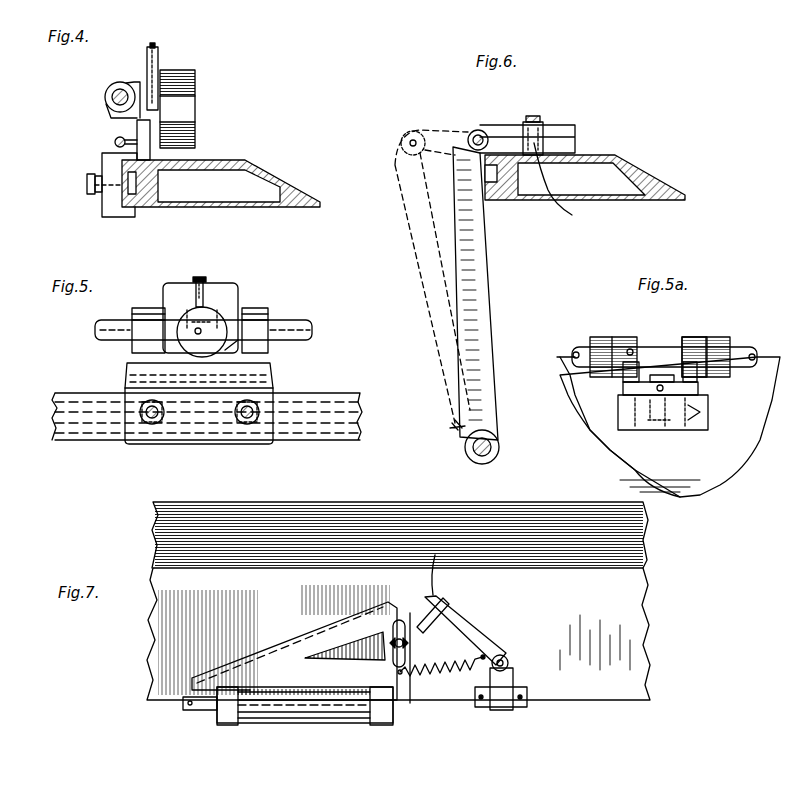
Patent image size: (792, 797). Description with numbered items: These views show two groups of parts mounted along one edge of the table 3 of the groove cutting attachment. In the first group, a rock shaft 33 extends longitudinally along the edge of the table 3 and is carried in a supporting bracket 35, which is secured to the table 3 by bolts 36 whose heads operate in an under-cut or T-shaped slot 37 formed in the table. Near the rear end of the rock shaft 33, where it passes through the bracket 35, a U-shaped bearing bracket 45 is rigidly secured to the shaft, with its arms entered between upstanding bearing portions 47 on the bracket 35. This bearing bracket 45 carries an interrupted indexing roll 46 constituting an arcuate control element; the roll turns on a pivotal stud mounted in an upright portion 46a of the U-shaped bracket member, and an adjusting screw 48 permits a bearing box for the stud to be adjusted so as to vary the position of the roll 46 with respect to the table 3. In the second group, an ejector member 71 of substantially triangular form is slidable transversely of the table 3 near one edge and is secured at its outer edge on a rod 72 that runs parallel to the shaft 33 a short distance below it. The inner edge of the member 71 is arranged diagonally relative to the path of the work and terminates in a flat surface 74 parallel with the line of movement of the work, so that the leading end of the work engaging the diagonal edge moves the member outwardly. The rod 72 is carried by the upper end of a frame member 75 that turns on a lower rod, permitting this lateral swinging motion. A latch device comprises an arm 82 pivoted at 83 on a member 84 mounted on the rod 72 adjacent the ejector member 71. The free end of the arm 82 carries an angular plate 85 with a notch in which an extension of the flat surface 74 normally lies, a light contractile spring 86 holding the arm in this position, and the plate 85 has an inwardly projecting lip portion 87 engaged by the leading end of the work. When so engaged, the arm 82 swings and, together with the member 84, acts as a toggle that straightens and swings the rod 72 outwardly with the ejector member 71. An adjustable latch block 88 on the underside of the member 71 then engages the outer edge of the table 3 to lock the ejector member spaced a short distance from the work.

In FIG. 4, the table 3 is at (232, 160).
In FIG. 5, the table 3 is at (325, 393).
In FIG. 6, the table 3 is at (612, 157).
In FIG. 5A, the table 3 is at (690, 470).
In FIG. 7, the table 3 is at (210, 640).
In FIG. 4, the rock shaft 33 is at (112, 92).
In FIG. 5, the rock shaft 33 is at (290, 320).
In FIG. 5A, the rock shaft 33 is at (580, 350).
In FIG. 4, the bracket 35 is at (118, 210).
In FIG. 5, the bracket 35 is at (273, 366).
In FIG. 4, the bolts 36 is at (90, 195).
In FIG. 5, the bolts 36 is at (150, 424).
In FIG. 4, the T-shaped slot 37 is at (158, 185).
In FIG. 6, the T-shaped slot 37 is at (518, 185).
In FIG. 5, the bearing bracket 45 is at (236, 315).
In FIG. 5A, the bearing bracket 45 is at (694, 342).
In FIG. 4, the interrupted indexing roll 46 is at (196, 110).
In FIG. 5, the interrupted indexing roll 46 is at (127, 366).
In FIG. 5A, the interrupted indexing roll 46 is at (650, 430).
In FIG. 4, the upright portion 46a is at (158, 55).
In FIG. 5, the upright portion 46a is at (172, 292).
In FIG. 5A, the upright portion 46a is at (623, 390).
In FIG. 5, the upstanding bearing portions 47 is at (270, 310).
In FIG. 5A, the upstanding bearing portions 47 is at (604, 337).
In FIG. 5, the adjusting screw 48 is at (203, 282).
In FIG. 5A, the adjusting screw 48 is at (661, 372).
In FIG. 6, the ejector member 71 is at (548, 126).
In FIG. 7, the ejector member 71 is at (278, 652).
In FIG. 4, the rod 72 is at (115, 141).
In FIG. 6, the rod 72 is at (478, 129).
In FIG. 7, the rod 72 is at (332, 724).
In FIG. 6, the flat surface 74 is at (576, 135).
In FIG. 7, the flat surface 74 is at (396, 615).
In FIG. 6, the frame member 75 is at (490, 295).
In FIG. 7, the frame member 75 is at (276, 724).
In FIG. 7, the arm 82 is at (460, 622).
In FIG. 7, the pivot 83 is at (508, 660).
In FIG. 7, the member 84 is at (514, 676).
In FIG. 7, the angular plate 85 is at (450, 604).
In FIG. 7, the contractile spring 86 is at (455, 660).
In FIG. 7, the lip portion 87 is at (433, 567).
In FIG. 6, the latch block 88 is at (562, 188).
In FIG. 7, the latch block 88 is at (345, 647).